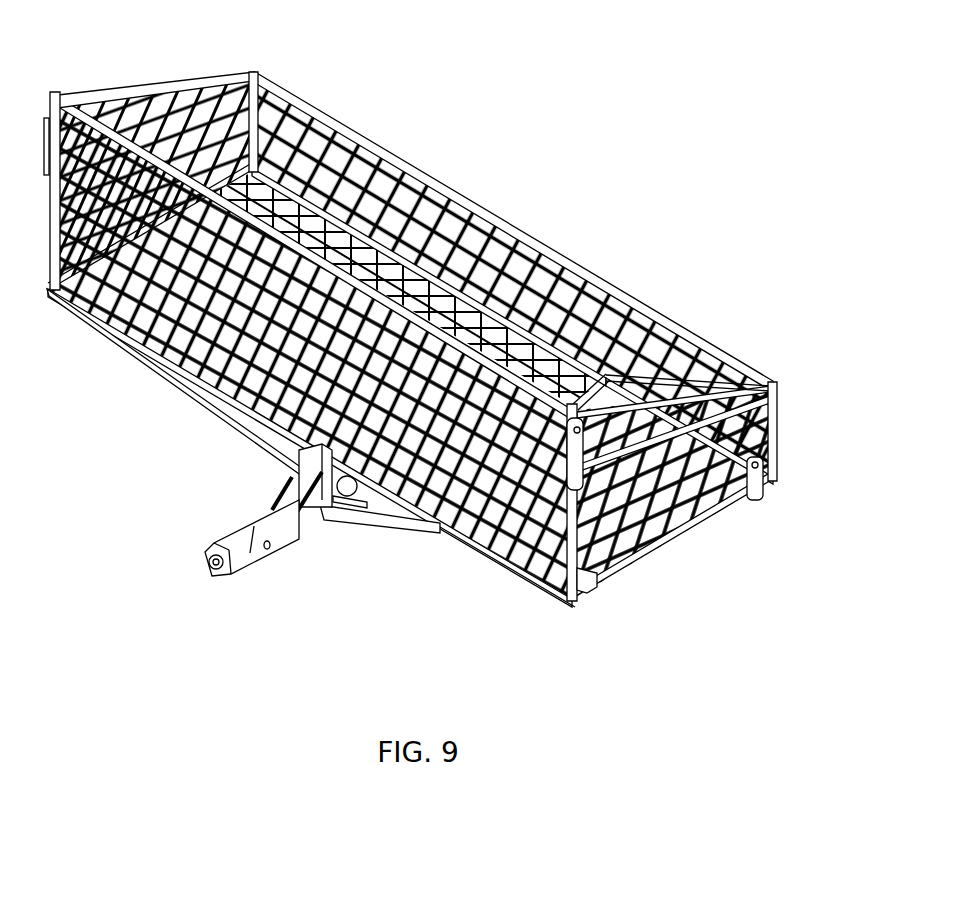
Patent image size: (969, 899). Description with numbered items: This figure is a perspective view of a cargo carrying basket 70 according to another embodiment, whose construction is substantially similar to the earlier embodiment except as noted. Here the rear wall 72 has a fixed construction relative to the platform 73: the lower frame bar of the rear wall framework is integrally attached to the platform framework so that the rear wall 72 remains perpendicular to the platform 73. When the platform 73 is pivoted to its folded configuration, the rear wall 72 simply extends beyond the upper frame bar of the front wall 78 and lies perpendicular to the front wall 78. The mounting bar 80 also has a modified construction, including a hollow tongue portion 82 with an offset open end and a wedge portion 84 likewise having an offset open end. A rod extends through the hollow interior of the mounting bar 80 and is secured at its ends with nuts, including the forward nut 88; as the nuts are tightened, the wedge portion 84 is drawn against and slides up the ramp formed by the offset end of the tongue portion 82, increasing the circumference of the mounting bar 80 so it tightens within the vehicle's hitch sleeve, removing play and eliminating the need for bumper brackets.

The cargo carrying basket 70 is at (410, 317).
The rear wall 72 is at (572, 244).
The platform 73 is at (677, 549).
The front wall 78 is at (66, 88).
The mounting bar 80 is at (282, 525).
The tongue portion 82 is at (221, 553).
The wedge portion 84 is at (227, 547).
The forward nut 88 is at (210, 563).